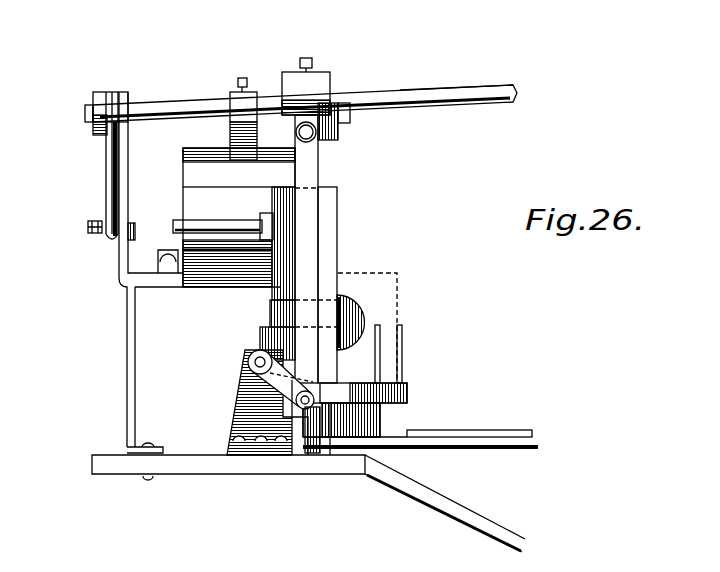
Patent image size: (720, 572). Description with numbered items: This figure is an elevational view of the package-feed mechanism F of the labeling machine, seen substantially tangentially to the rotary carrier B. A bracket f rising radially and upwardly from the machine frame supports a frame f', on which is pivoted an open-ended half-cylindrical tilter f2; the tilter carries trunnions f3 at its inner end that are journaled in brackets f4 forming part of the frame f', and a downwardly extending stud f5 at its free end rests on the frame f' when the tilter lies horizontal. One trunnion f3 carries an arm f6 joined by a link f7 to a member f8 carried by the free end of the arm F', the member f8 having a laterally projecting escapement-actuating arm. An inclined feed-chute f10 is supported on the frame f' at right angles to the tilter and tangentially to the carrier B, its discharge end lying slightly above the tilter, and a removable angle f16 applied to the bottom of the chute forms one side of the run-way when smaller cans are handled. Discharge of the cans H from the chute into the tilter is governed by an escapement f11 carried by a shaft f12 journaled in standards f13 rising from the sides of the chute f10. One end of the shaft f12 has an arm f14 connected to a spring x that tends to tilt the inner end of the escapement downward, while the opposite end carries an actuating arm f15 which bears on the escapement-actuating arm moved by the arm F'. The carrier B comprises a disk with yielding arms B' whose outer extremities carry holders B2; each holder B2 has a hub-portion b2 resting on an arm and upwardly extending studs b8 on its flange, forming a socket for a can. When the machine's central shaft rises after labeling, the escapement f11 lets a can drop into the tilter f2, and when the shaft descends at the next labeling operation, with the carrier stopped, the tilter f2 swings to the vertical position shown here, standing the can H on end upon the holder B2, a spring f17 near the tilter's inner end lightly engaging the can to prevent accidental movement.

The shaft f12 is at (170, 110).
The arm F' is at (453, 65).
The arm f14 is at (107, 187).
The standards f13 is at (122, 255).
The removable angle f16 is at (130, 284).
The feed mechanism F is at (106, 407).
The inclined feed-chute f10 is at (135, 240).
The spring x is at (90, 232).
The tilter f2 is at (278, 202).
The stud f5 is at (225, 230).
The escapement f11 is at (243, 108).
The member f8 is at (300, 80).
The actuating arm f15 is at (347, 100).
The link f7 is at (310, 165).
The can H is at (283, 172).
The spring f17 is at (345, 323).
The studs b8 is at (380, 335).
The hub-portion b2 is at (377, 415).
The carrier B is at (469, 411).
The arms B' is at (420, 463).
The holder B2 is at (343, 428).
The frame f' is at (222, 440).
The bracket f is at (445, 503).
The brackets f4 is at (245, 415).
The trunnions f3 is at (252, 360).
The arm f6 is at (246, 382).